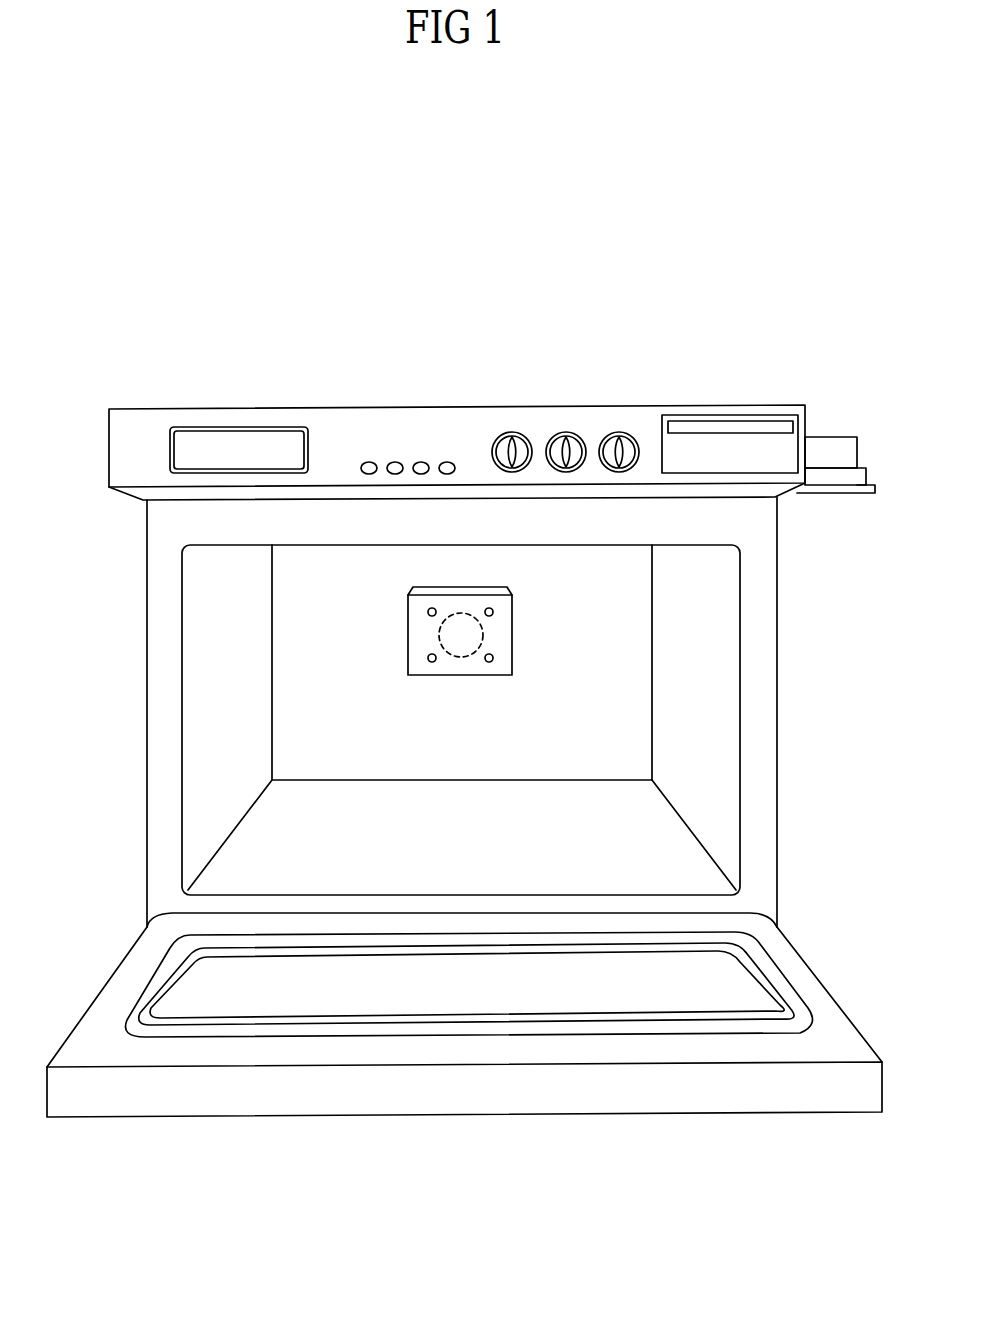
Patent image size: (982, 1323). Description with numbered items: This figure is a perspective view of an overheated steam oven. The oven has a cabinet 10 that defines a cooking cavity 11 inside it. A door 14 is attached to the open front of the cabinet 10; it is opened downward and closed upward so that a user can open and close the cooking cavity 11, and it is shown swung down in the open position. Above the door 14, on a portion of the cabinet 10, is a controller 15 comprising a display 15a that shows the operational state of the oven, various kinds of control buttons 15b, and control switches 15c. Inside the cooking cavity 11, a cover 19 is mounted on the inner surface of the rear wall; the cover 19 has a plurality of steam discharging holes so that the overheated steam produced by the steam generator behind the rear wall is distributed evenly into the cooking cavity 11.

The cabinet 10 is at (684, 349).
The cooking cavity 11 is at (462, 762).
The door 14 is at (483, 1096).
The controller 15 is at (360, 420).
The display 15a is at (228, 432).
The control buttons 15b is at (416, 432).
The control switches 15c is at (563, 440).
The cover 19 is at (512, 664).